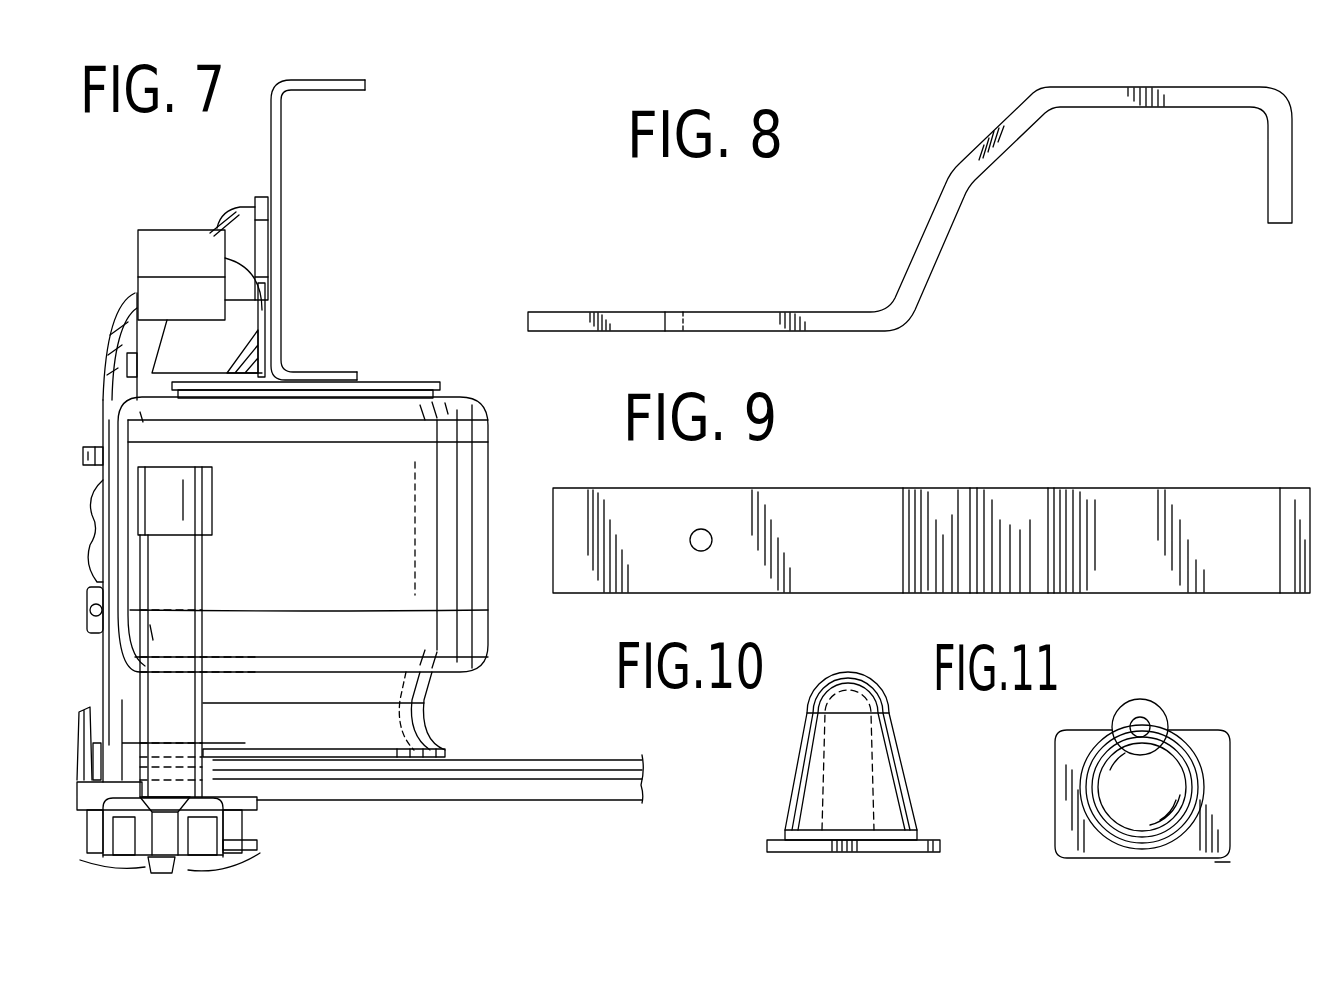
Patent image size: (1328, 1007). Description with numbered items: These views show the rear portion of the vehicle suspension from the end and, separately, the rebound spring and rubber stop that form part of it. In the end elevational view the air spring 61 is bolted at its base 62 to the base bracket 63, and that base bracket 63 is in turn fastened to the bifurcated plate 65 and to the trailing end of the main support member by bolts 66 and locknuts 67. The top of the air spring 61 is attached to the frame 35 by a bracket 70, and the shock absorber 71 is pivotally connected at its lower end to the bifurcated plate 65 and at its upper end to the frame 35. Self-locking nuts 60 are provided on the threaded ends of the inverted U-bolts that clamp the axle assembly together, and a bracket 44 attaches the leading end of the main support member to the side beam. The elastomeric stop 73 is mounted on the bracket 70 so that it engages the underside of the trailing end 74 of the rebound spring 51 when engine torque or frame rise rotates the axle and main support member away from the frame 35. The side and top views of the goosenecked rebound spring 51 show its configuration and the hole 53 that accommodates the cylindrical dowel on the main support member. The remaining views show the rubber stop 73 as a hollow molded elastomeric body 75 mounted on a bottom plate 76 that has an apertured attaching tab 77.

In FIG. 7, the frame 35 is at (279, 136).
In FIG. 7, the bracket 44 is at (243, 204).
In FIG. 8, the rebound leaf spring 51 is at (947, 229).
In FIG. 9, the rebound leaf spring 51 is at (851, 593).
In FIG. 8, the hole 53 is at (673, 311).
In FIG. 9, the hole 53 is at (702, 551).
In FIG. 7, the self-locking nuts 60 is at (87, 824).
In FIG. 7, the air spring 61 is at (486, 632).
In FIG. 7, the base 62 is at (424, 725).
In FIG. 7, the base bracket 63 is at (394, 800).
In FIG. 7, the bifurcated plate 65 is at (257, 842).
In FIG. 7, the bolts 66 is at (80, 860).
In FIG. 7, the locknuts 67 is at (258, 855).
In FIG. 7, the bracket 70 is at (265, 300).
In FIG. 7, the shock absorber 71 is at (143, 560).
In FIG. 7, the elastomeric stop 73 is at (235, 262).
In FIG. 10, the elastomeric stop 73 is at (797, 762).
In FIG. 11, the elastomeric stop 73 is at (1231, 790).
In FIG. 7, the trailing end 74 is at (138, 256).
In FIG. 10, the hollow molded elastomeric body 75 is at (902, 766).
In FIG. 11, the hollow molded elastomeric body 75 is at (1200, 750).
In FIG. 10, the bottom plate 76 is at (780, 857).
In FIG. 11, the bottom plate 76 is at (1213, 863).
In FIG. 11, the apertured attaching tab 77 is at (1164, 713).